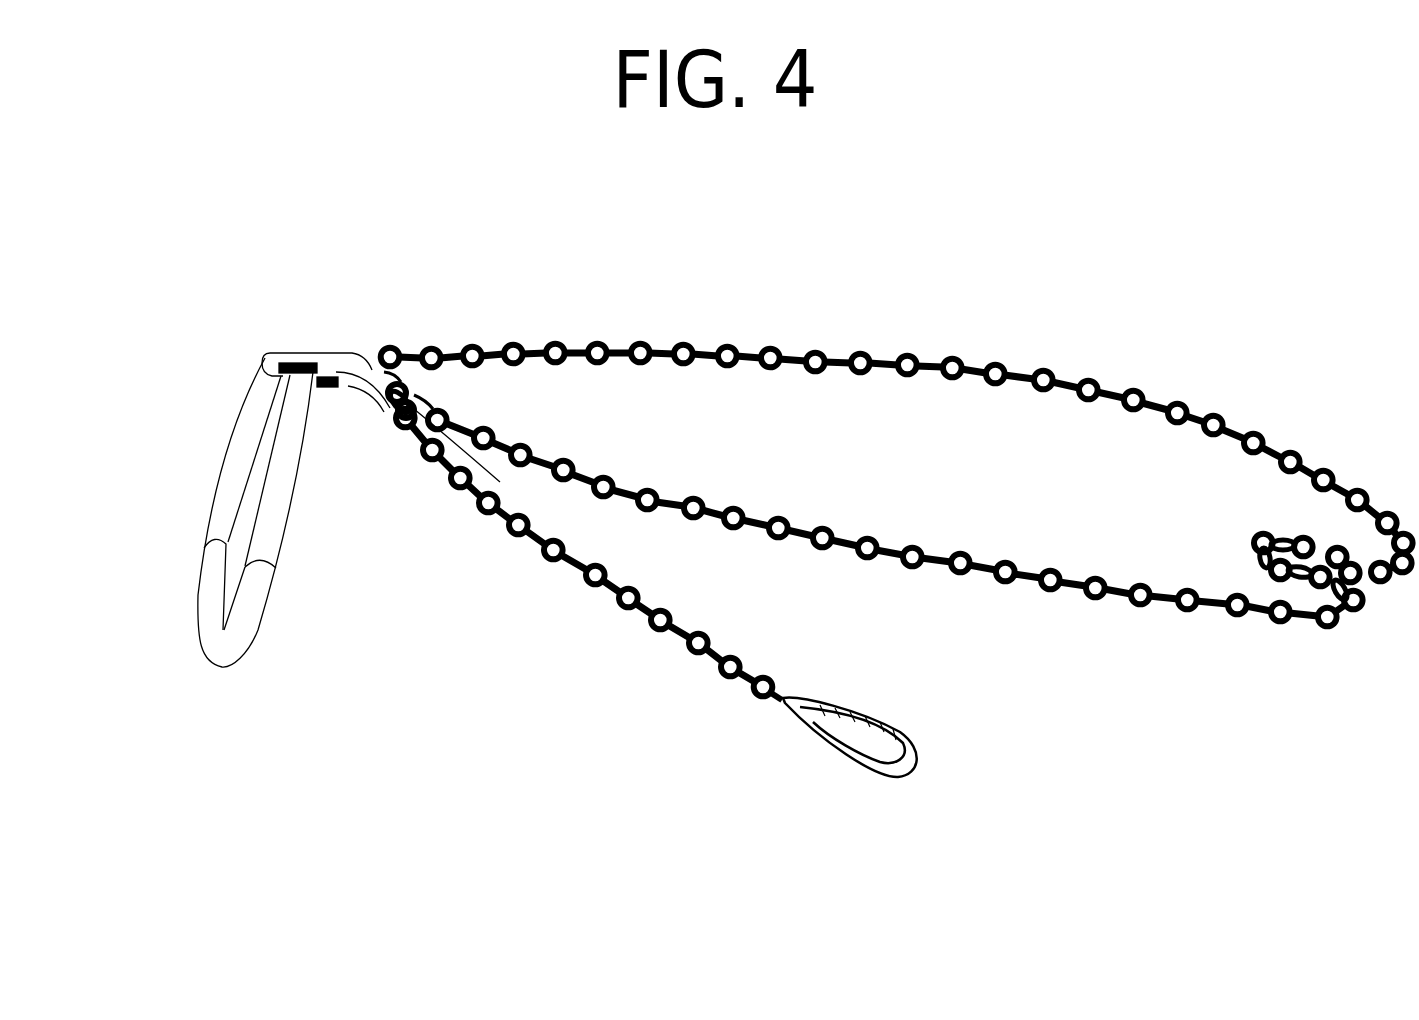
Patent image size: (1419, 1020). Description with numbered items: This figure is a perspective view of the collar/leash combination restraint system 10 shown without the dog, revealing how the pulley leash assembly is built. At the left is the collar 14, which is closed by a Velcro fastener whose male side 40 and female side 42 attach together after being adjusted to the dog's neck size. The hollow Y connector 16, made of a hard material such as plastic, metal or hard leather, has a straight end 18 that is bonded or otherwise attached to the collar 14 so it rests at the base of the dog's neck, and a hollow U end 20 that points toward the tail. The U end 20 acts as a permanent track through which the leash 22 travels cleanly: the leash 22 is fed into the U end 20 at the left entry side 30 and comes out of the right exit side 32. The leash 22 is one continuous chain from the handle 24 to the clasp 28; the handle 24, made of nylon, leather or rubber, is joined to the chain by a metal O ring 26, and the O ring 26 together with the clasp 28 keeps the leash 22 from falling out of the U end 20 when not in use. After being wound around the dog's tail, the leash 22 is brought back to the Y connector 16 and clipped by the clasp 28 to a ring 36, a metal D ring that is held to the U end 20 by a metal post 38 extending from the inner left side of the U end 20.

The collar/leash combination restraint system 10 is at (193, 214).
The collar 14 is at (228, 466).
The Y connector 16 is at (352, 356).
The straight end 18 is at (296, 356).
The U end 20 is at (347, 388).
The leash 22 is at (567, 570).
The handle 24 is at (863, 762).
The O ring 26 is at (753, 697).
The clasp 28 is at (517, 482).
The left entry side 30 is at (393, 424).
The right exit side 32 is at (393, 345).
The ring 36 is at (423, 402).
The post 38 is at (393, 378).
The male side 40 is at (253, 621).
The female side 42 is at (207, 593).